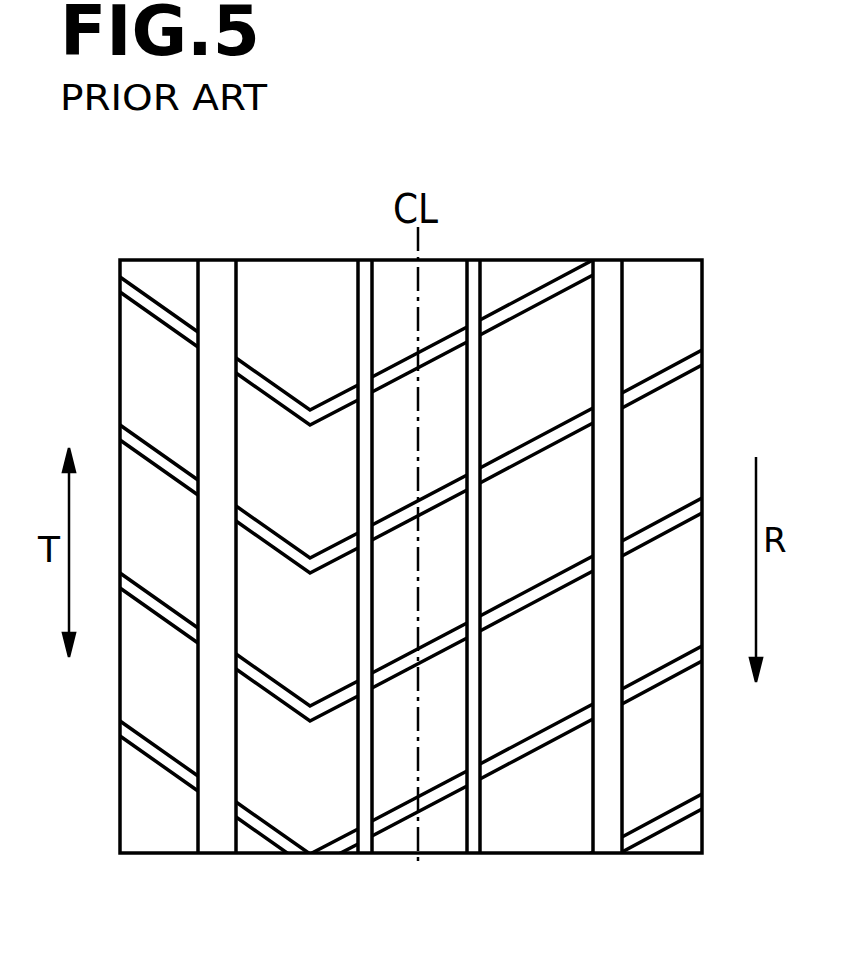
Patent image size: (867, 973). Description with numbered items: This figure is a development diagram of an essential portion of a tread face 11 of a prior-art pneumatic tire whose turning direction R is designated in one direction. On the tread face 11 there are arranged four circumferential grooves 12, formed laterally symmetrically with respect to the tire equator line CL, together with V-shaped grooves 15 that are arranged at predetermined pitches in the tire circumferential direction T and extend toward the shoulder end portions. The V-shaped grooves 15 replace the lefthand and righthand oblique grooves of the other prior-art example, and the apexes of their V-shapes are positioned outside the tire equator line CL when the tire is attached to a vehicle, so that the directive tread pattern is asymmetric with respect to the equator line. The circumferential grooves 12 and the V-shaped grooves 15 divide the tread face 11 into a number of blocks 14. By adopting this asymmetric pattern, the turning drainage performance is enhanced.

The tread face 11 is at (563, 256).
The circumferential grooves 12 is at (363, 305).
The blocks 14 is at (322, 633).
The V-shaped grooves 15 is at (435, 792).